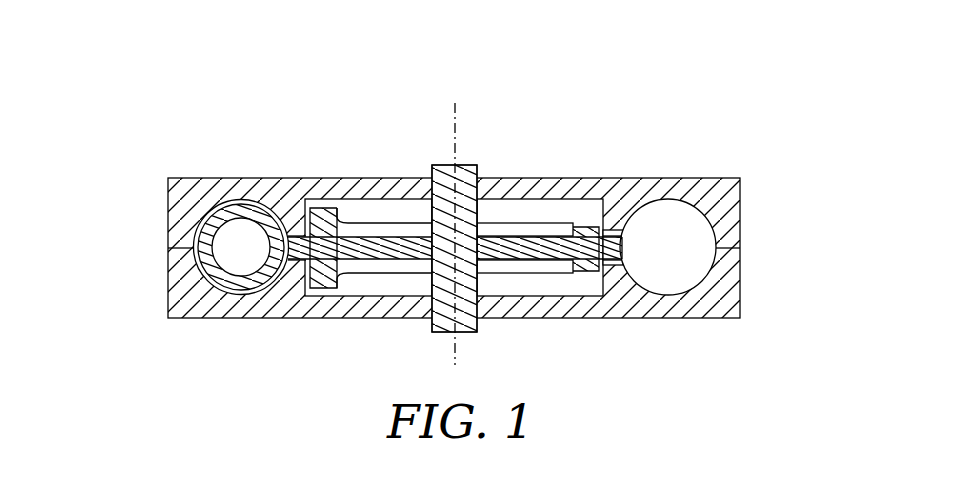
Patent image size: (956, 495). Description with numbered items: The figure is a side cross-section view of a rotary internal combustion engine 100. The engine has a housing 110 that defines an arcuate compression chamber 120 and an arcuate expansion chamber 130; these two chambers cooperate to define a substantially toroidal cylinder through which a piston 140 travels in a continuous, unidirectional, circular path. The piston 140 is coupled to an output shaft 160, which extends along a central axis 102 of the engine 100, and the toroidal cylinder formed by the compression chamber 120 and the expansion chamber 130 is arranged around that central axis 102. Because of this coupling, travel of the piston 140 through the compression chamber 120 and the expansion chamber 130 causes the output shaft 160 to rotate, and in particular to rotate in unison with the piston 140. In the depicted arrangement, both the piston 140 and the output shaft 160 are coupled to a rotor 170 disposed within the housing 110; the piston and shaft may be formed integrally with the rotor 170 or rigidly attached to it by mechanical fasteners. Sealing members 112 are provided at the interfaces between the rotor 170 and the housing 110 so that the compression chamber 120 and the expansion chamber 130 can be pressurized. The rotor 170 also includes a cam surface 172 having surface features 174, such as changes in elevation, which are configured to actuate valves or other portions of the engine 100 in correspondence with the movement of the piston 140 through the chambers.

The rotary internal combustion engine 100 is at (138, 135).
The central axis 102 is at (454, 122).
The housing 110 is at (724, 178).
The sealing members 112 is at (625, 236).
The compression chamber 120 is at (247, 200).
The expansion chamber 130 is at (667, 199).
The piston 140 is at (200, 232).
The output shaft 160 is at (462, 164).
The rotor 170 is at (377, 237).
The cam surface 172 is at (503, 222).
The surface features 174 is at (329, 208).